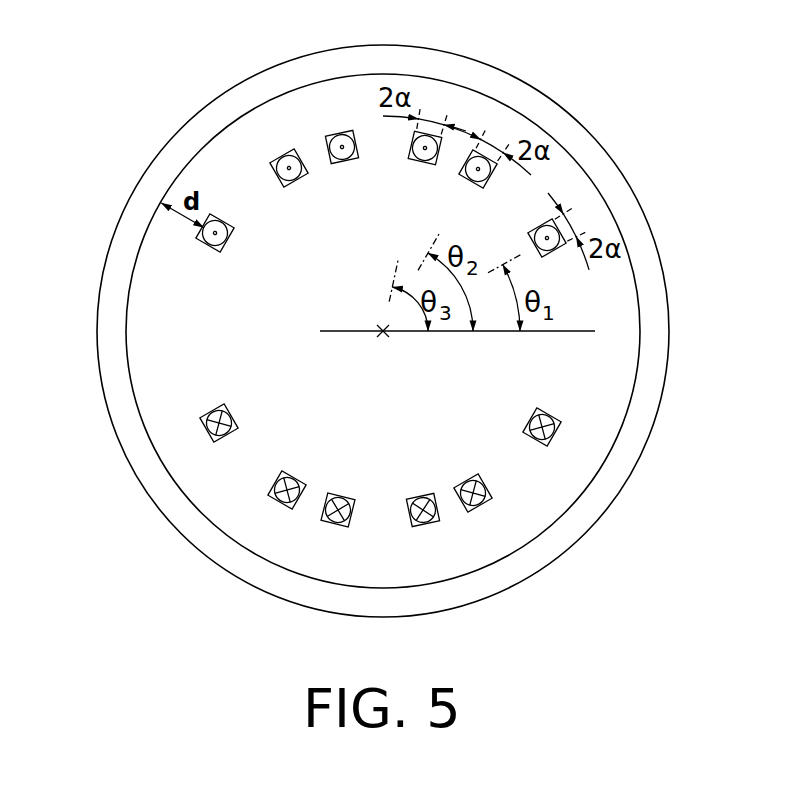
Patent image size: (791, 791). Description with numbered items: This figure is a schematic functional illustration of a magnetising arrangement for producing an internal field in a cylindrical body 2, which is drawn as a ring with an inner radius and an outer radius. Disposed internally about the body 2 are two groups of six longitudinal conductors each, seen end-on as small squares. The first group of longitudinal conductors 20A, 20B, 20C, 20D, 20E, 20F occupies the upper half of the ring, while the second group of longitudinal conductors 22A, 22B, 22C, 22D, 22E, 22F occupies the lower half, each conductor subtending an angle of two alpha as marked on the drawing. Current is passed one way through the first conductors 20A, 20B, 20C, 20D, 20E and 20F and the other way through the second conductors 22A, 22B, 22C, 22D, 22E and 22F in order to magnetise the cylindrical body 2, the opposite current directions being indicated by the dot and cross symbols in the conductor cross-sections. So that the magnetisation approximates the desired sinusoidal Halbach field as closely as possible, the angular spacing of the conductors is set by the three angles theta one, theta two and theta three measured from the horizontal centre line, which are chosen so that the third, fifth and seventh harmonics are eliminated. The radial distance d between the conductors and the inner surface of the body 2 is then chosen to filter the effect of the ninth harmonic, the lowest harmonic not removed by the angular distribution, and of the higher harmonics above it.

The cylindrical body 2 is at (657, 350).
The longitudinal conductor of the first group 20A is at (203, 240).
The longitudinal conductor of the first group 20B is at (281, 158).
The longitudinal conductor of the first group 20C is at (341, 140).
The longitudinal conductor of the first group 20D is at (427, 141).
The longitudinal conductor of the first group 20E is at (485, 162).
The longitudinal conductor of the first group 20F is at (558, 232).
The longitudinal conductor of the second group 22A is at (205, 428).
The longitudinal conductor of the second group 22B is at (280, 500).
The longitudinal conductor of the second group 22C is at (337, 522).
The longitudinal conductor of the second group 22D is at (424, 522).
The longitudinal conductor of the second group 22E is at (480, 503).
The longitudinal conductor of the second group 22F is at (556, 436).